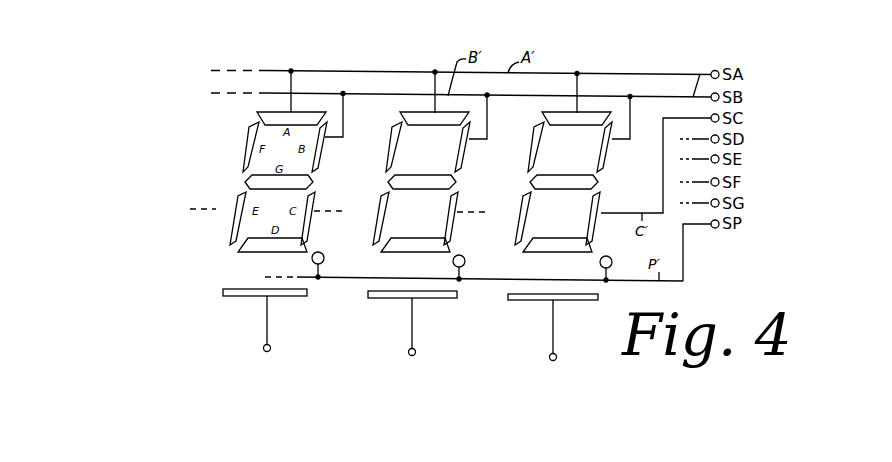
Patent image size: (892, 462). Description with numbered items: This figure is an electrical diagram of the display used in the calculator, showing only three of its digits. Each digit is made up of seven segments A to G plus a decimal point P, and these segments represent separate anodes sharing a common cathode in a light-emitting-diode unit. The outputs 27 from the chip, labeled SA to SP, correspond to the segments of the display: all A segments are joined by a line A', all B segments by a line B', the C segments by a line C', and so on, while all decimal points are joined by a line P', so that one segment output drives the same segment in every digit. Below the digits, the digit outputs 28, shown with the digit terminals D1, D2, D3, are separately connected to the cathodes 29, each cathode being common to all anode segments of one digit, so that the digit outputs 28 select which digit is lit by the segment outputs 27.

The outputs 27 is at (698, 73).
The digit outputs 28 is at (553, 326).
The cathodes 29 is at (369, 298).
The digit 1 terminal D1 is at (552, 342).
The digit 2 terminal D2 is at (413, 340).
The digit 3 terminal D3 is at (264, 339).